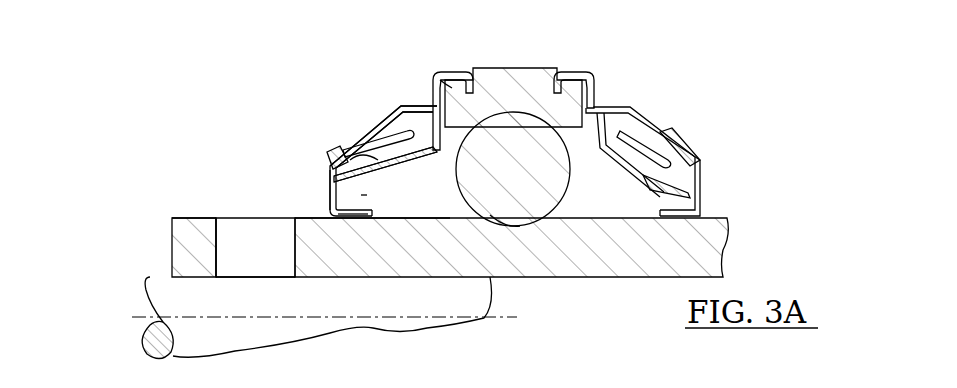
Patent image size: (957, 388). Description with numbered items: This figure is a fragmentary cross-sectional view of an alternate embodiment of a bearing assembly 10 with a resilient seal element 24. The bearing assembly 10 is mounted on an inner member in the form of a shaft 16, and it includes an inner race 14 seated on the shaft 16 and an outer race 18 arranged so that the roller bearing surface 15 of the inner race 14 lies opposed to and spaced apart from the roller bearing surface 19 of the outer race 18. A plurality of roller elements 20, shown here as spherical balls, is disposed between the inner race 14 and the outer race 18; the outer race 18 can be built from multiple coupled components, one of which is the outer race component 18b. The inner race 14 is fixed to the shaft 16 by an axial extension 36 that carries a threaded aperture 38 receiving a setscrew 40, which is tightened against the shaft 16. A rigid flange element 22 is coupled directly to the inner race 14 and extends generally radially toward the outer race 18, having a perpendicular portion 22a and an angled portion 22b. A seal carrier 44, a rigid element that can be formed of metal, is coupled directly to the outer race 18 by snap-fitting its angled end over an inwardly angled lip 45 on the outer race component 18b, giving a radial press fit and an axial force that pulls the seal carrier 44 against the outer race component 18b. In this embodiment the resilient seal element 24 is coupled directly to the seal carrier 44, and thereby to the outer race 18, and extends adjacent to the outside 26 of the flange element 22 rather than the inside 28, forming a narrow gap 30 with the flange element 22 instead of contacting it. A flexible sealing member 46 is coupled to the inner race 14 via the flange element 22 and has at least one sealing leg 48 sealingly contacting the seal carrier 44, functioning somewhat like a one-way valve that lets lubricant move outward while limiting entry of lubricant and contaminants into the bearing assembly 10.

The bearing assembly 10 is at (748, 102).
The inner race 14 is at (447, 258).
The roller bearing surface 15 is at (517, 227).
The shaft 16 is at (190, 331).
The outer race 18 is at (498, 177).
The outer race component 18b is at (507, 88).
The roller bearing surface 19 is at (560, 76).
The roller elements 20 is at (547, 190).
The flange element 22 is at (446, 212).
The perpendicular portion 22a is at (332, 190).
The angled portion 22b is at (350, 162).
The resilient seal element 24 is at (372, 118).
The outside of flange element 26 is at (340, 150).
The inside of flange element 28 is at (685, 153).
The gap 30 is at (433, 153).
The axial extension 36 is at (180, 232).
The threaded aperture 38 is at (213, 243).
The setscrew 40 is at (243, 250).
The seal carrier 44 is at (378, 185).
The inwardly angled lip 45 is at (457, 90).
The flexible sealing member 46 is at (343, 215).
The sealing leg 48 is at (365, 183).